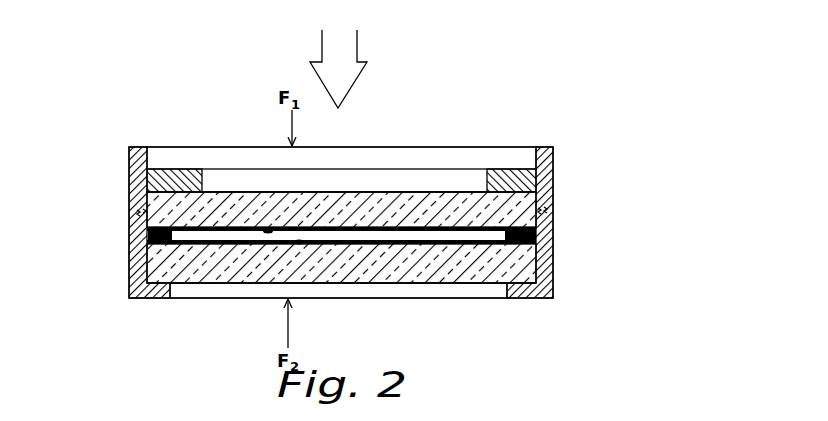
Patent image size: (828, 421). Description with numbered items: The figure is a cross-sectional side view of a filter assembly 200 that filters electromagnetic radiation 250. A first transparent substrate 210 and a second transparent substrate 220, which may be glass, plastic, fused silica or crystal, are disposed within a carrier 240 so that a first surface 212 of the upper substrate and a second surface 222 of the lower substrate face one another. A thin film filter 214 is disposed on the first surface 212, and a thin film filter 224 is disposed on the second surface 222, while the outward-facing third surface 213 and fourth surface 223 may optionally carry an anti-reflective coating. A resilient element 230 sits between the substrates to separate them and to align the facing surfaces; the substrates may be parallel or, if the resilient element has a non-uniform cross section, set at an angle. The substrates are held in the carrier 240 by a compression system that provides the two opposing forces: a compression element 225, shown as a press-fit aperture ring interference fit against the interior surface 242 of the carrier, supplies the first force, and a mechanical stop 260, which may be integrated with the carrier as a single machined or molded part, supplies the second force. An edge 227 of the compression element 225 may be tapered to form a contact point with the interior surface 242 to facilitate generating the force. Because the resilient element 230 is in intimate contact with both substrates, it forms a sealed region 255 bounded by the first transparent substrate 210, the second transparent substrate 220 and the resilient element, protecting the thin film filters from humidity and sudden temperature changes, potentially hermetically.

The filter assembly 200 is at (541, 107).
The electromagnetic radiation 250 is at (357, 43).
The interior surface of carrier 242 is at (150, 162).
The edge of compression element 227 is at (536, 176).
The compression element 225 is at (498, 165).
The third surface 213 is at (415, 192).
The first transparent substrate 210 is at (147, 210).
The first surface 212 is at (362, 227).
The thin film filter 214 is at (266, 230).
The resilient element 230 is at (148, 237).
The sealed region 255 is at (538, 243).
The carrier 240 is at (558, 210).
The second surface 222 is at (422, 246).
The thin film filter 224 is at (301, 243).
The second transparent substrate 220 is at (147, 268).
The fourth surface 223 is at (452, 283).
The mechanical stop 260 is at (166, 298).